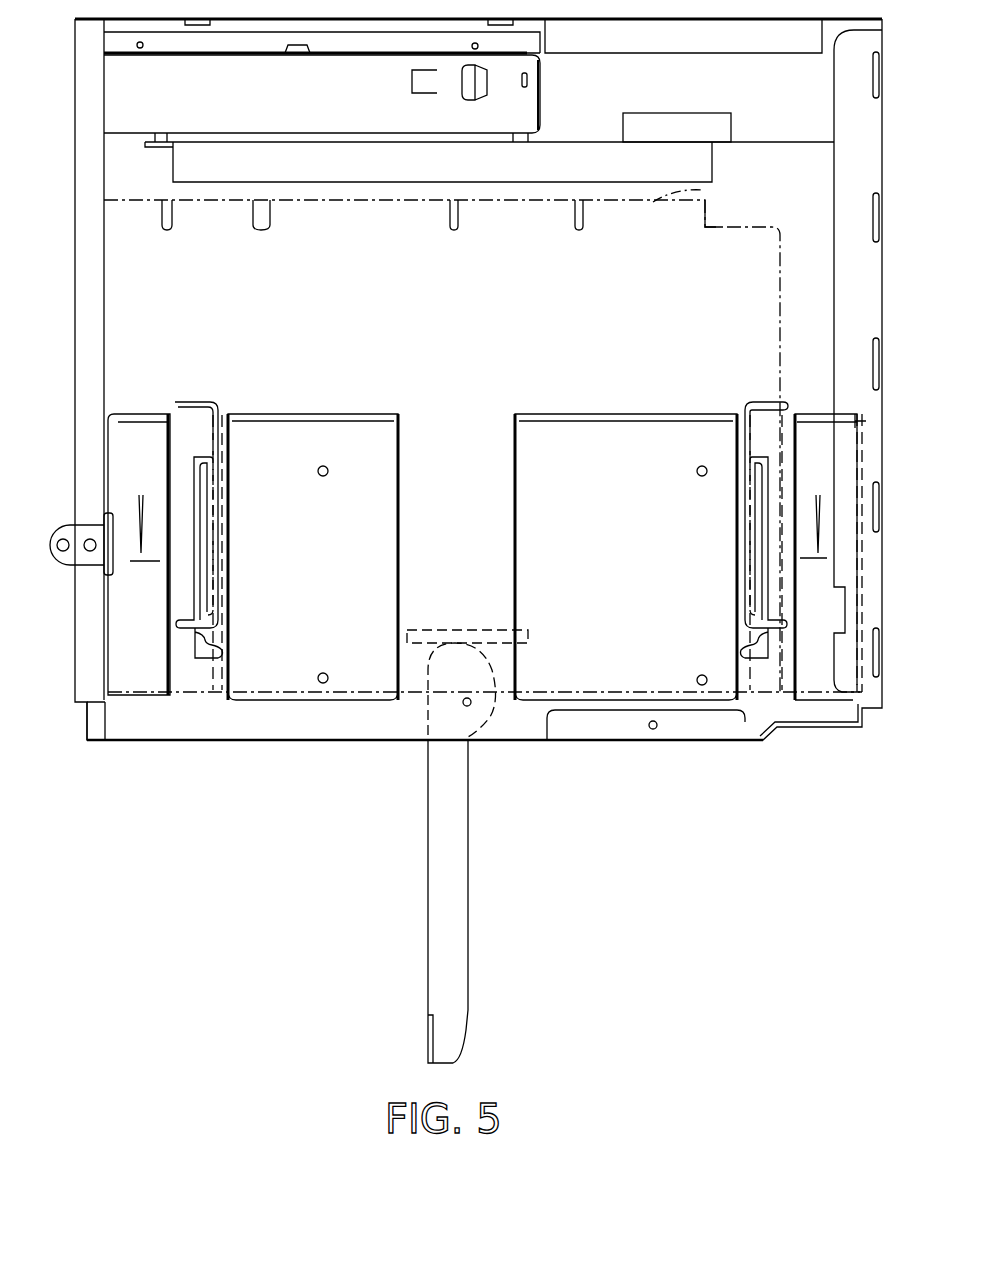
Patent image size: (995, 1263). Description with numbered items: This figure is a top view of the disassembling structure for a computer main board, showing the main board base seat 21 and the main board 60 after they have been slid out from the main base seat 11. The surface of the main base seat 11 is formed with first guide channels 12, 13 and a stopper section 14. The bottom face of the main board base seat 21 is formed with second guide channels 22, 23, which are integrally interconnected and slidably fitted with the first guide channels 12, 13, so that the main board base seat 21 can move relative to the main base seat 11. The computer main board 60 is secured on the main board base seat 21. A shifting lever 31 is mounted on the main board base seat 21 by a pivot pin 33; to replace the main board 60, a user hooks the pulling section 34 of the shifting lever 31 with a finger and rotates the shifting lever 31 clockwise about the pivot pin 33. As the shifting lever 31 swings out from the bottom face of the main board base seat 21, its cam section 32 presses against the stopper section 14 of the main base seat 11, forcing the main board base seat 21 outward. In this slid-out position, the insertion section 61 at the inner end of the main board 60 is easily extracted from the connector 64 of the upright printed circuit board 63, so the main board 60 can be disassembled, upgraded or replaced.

The main base seat 11 is at (83, 308).
The first guide channel 12 is at (222, 410).
The first guide channel 13 is at (740, 440).
The stopper section 14 is at (507, 657).
The main board base seat 21 is at (354, 412).
The second guide channel 22 is at (192, 645).
The second guide channel 23 is at (763, 650).
The shifting lever 31 is at (468, 930).
The cam section 32 is at (477, 637).
The pivot pin 33 is at (470, 705).
The pulling section 34 is at (431, 1035).
The main board 60 is at (782, 290).
The insertion section 61 is at (707, 192).
The upright printed circuit board 63 is at (580, 147).
The connector 64 is at (712, 167).